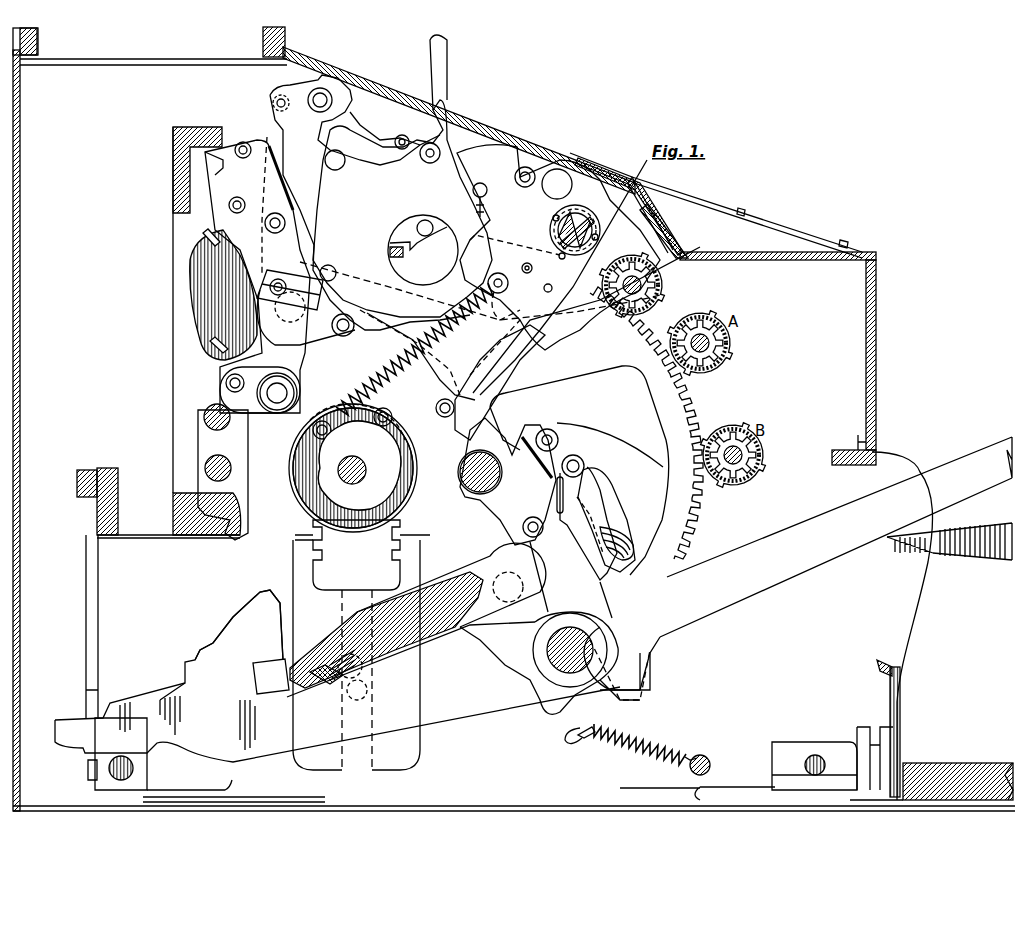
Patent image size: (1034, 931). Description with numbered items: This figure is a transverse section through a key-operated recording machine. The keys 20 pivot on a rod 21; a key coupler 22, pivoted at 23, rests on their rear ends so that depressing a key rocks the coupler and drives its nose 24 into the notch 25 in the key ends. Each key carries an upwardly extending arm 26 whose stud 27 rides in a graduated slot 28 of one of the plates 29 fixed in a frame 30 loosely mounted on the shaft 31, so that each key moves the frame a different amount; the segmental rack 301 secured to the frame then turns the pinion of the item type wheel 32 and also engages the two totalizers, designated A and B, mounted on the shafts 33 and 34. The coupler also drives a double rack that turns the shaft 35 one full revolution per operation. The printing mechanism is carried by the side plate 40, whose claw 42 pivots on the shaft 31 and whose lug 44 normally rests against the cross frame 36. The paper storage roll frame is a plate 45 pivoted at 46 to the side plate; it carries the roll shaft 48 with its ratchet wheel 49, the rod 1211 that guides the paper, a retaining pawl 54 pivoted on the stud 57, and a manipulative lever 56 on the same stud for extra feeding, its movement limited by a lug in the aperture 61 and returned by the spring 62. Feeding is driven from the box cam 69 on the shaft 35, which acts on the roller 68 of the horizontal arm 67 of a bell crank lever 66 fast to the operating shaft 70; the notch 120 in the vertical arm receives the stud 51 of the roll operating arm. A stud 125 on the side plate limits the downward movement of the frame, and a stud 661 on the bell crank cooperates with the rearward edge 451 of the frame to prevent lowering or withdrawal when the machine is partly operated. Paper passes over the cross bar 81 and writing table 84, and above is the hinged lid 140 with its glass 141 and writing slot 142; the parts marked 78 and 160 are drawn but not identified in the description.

The keys 20 is at (990, 568).
The rod 21 is at (580, 680).
The key coupler 22 is at (443, 620).
The pivot 23 is at (510, 566).
The nose 24 is at (315, 685).
The notch 25 is at (255, 678).
The upwardly extending arm 26 is at (468, 628).
The stud 27 is at (576, 455).
The slot 28 is at (605, 510).
The plates 29 is at (607, 510).
The frame 30 is at (545, 428).
The segmental rack 301 is at (690, 395).
The shaft 31 is at (480, 492).
The item type wheel 32 is at (664, 290).
The shaft 33 is at (733, 348).
The shaft 34 is at (765, 450).
The shaft 35 is at (320, 488).
The cross frame 36 is at (200, 128).
The side plate 40 is at (505, 250).
The claw 42 is at (503, 475).
The lug 44 is at (222, 143).
The plate 45 is at (402, 208).
The rearward edge 451 is at (270, 145).
The pivot 46 is at (595, 205).
The shaft 48 is at (346, 162).
The ratchet wheel 49 is at (355, 118).
The stud 51 is at (328, 90).
The retaining pawl 54 is at (380, 128).
The manipulative lever 56 is at (440, 55).
The stud 57 is at (440, 150).
The aperture 61 is at (450, 245).
The spring 62 is at (486, 210).
The bell crank lever 66 is at (305, 309).
The horizontal arm 67 is at (335, 395).
The roller 68 is at (440, 400).
The box cam 69 is at (310, 470).
The operating shaft 70 is at (243, 420).
The key lever 78 is at (223, 294).
The cross bar 81 is at (672, 228).
The writing table 84 is at (690, 236).
The notch 120 is at (370, 198).
The stud 125 is at (330, 335).
The hinged lid 140 is at (345, 82).
The glass 141 is at (540, 135).
The writing slot 142 is at (700, 205).
The pin 160 is at (411, 248).
The stud 661 is at (280, 92).
The rod 1211 is at (338, 260).